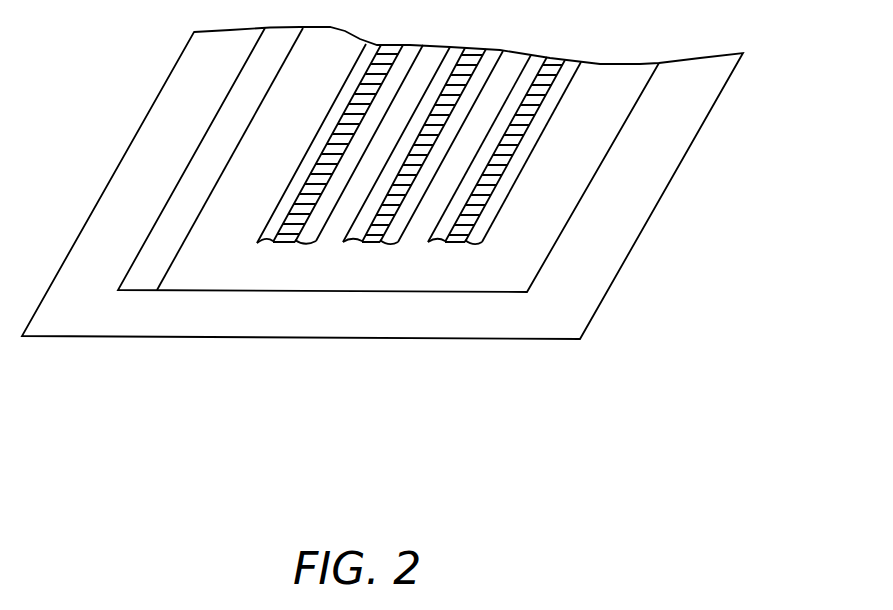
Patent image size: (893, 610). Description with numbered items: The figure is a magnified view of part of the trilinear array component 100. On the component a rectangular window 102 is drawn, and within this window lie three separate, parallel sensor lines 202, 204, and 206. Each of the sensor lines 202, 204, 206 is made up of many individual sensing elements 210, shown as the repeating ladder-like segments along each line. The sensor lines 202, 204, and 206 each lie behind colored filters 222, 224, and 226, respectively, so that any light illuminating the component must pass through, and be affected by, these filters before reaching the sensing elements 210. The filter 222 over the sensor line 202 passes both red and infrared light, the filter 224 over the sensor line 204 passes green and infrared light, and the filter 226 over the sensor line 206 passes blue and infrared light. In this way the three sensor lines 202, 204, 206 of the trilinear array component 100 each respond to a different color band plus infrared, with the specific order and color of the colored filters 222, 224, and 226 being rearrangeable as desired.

The trilinear array component 100 is at (765, 40).
The rectangular window 102 is at (522, 305).
The sensor line 202 is at (315, 165).
The sensor line 204 is at (460, 168).
The sensor line 206 is at (504, 172).
The sensing elements 210 is at (332, 158).
The colored filter 222 is at (316, 242).
The colored filter 224 is at (463, 122).
The colored filter 226 is at (498, 210).